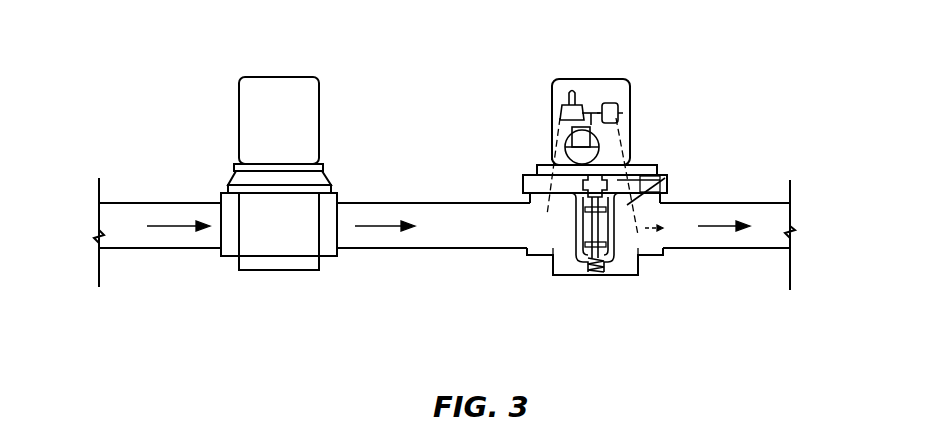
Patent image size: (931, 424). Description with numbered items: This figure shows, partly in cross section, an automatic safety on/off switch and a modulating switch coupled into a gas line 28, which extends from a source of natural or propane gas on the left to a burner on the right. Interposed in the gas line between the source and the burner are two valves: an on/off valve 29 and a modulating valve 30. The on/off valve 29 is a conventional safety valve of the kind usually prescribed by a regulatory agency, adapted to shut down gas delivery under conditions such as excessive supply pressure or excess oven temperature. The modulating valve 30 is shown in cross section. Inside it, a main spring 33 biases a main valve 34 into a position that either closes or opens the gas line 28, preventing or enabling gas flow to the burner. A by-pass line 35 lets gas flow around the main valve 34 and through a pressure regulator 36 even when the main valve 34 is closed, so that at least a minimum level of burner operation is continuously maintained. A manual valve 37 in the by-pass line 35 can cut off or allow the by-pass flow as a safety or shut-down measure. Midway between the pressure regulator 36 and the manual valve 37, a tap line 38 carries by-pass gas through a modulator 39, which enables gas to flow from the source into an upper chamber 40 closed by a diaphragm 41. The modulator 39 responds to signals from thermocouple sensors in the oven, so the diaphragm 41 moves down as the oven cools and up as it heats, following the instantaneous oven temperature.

The gas line 28 is at (397, 248).
The on/off valve 29 is at (287, 72).
The modulating valve 30 is at (593, 70).
The main spring 33 is at (588, 272).
The main valve 34 is at (610, 272).
The by-pass line 35 is at (552, 128).
The pressure regulator 36 is at (562, 104).
The manual valve 37 is at (612, 102).
The tap line 38 is at (592, 128).
The modulator 39 is at (600, 141).
The upper chamber 40 is at (667, 183).
The diaphragm 41 is at (620, 180).